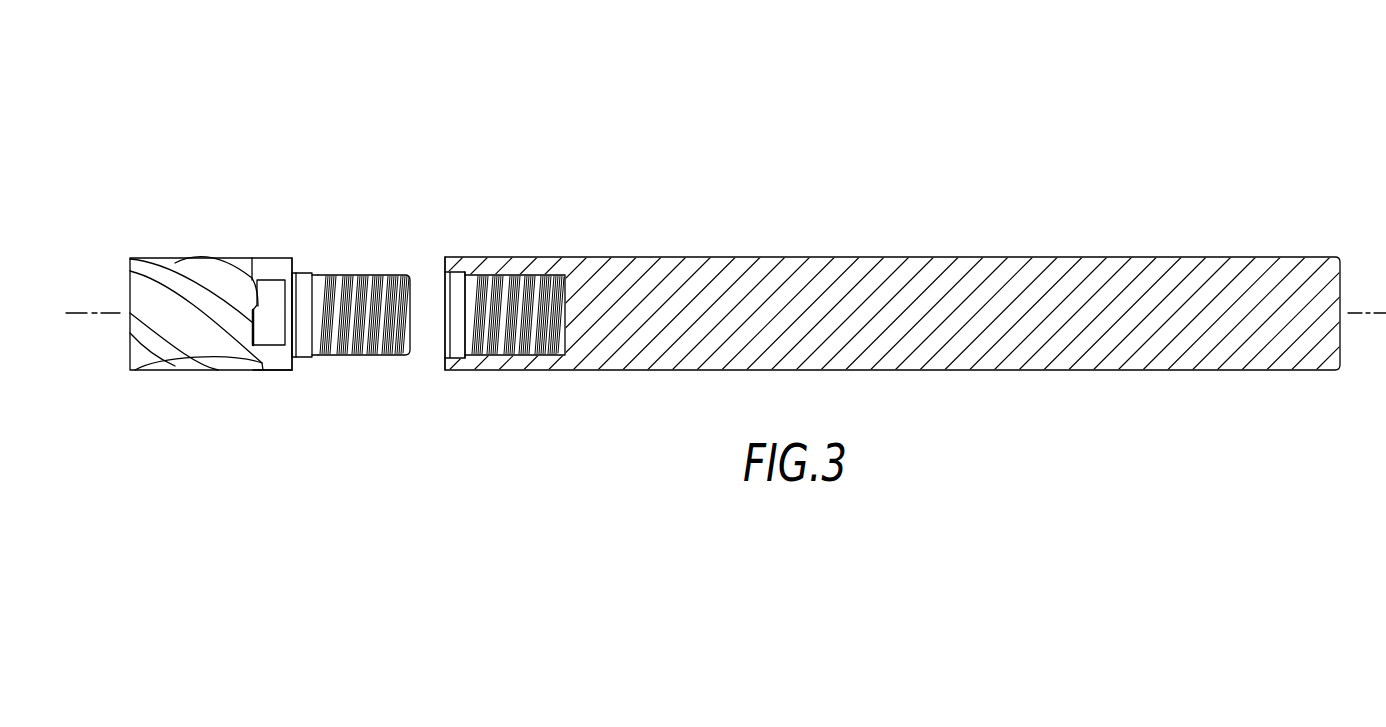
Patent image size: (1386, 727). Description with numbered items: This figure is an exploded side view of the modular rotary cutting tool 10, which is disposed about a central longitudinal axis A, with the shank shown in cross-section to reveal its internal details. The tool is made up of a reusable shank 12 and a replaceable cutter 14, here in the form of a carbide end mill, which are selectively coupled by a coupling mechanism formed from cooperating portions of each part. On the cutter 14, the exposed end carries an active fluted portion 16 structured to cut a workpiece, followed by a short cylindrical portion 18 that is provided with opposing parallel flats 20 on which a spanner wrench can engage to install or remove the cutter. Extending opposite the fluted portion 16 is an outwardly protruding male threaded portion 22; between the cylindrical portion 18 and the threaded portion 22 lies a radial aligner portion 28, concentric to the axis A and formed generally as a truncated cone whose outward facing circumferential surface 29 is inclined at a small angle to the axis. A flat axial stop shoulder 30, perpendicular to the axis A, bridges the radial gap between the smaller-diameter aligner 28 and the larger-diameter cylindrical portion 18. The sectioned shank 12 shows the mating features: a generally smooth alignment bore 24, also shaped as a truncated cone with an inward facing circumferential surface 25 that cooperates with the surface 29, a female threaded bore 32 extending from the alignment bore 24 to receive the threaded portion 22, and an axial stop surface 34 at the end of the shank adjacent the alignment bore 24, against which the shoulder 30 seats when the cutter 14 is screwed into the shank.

The modular rotary cutting tool 10 is at (737, 125).
The reusable shank 12 is at (794, 251).
The replaceable cutter 14 is at (271, 239).
The active fluted portion 16 is at (193, 328).
The short cylindrical portion 18 is at (274, 371).
The parallel flats 20 is at (272, 295).
The male threaded portion 22 is at (378, 353).
The alignment bore 24 is at (455, 280).
The inward facing circumferential surface 25 is at (460, 353).
The radial aligner portion 28 is at (302, 272).
The outward facing circumferential surface 29 is at (312, 358).
The axial stop shoulder 30 is at (293, 370).
The female threaded bore 32 is at (508, 276).
The axial stop surface 34 is at (445, 372).
The central longitudinal axis A is at (105, 312).